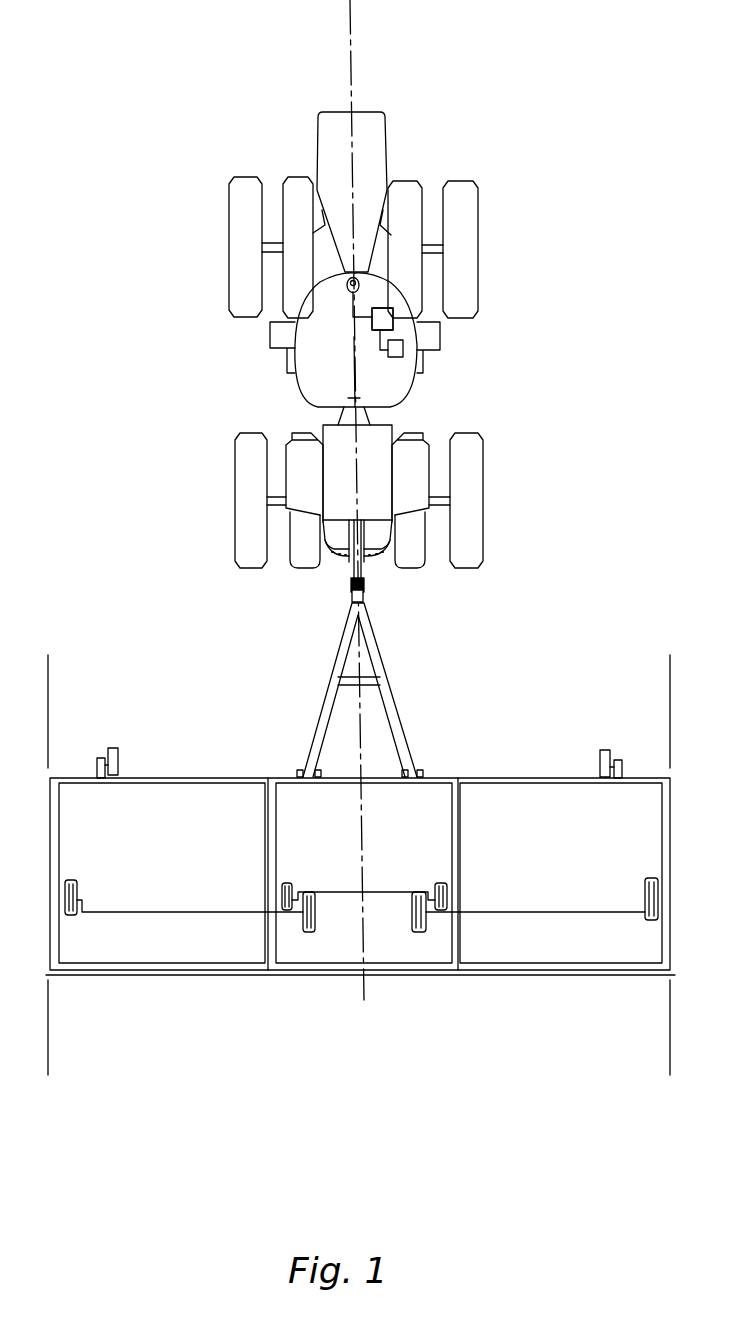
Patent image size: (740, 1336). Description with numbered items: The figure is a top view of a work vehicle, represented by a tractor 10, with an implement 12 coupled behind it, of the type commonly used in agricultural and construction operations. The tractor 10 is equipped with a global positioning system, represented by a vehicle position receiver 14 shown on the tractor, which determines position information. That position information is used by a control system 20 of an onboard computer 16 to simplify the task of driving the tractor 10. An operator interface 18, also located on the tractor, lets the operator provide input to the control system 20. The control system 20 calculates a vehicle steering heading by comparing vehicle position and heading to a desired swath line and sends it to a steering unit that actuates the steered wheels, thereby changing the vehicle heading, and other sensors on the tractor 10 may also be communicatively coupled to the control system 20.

The tractor 10 is at (558, 139).
The implement 12 is at (494, 779).
The vehicle position receiver 14 is at (360, 282).
The onboard computer 16 is at (386, 320).
The operator interface 18 is at (403, 352).
The control system 20 is at (517, 328).